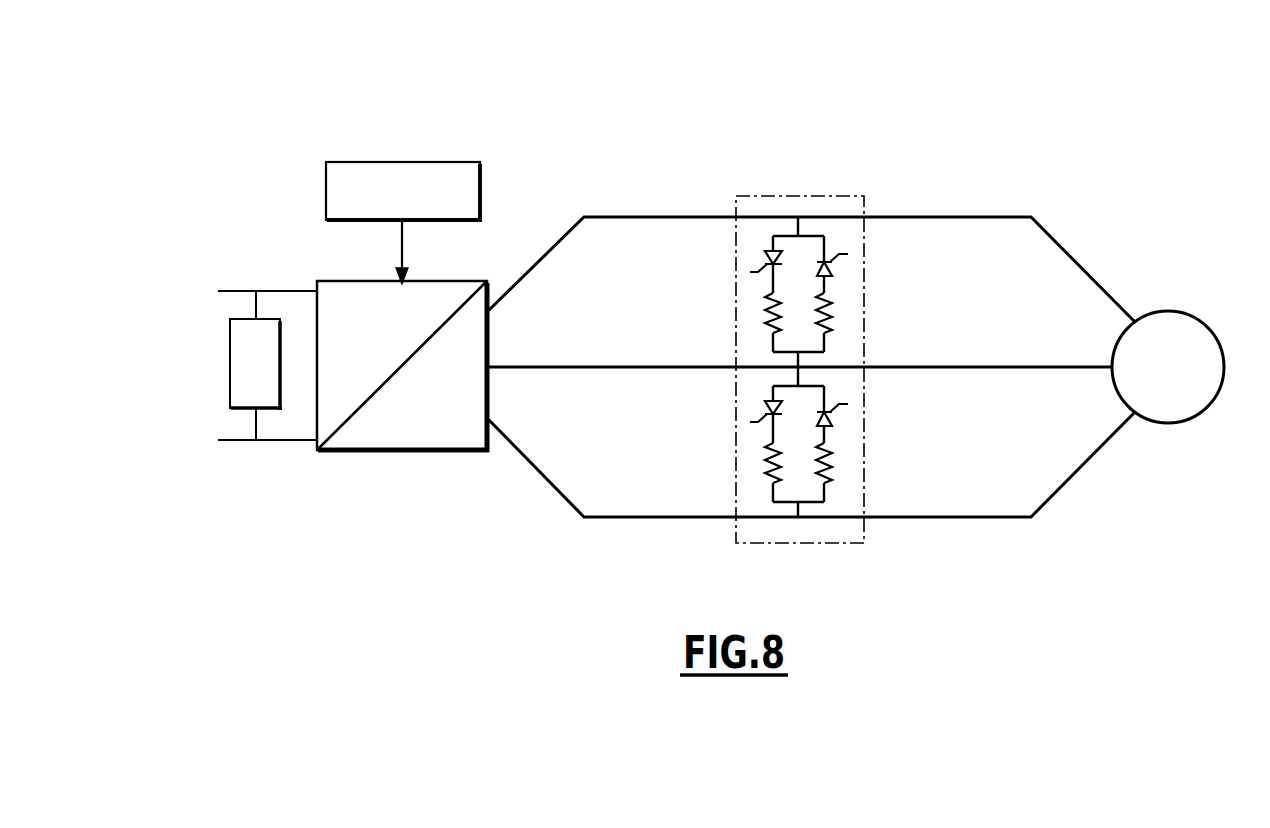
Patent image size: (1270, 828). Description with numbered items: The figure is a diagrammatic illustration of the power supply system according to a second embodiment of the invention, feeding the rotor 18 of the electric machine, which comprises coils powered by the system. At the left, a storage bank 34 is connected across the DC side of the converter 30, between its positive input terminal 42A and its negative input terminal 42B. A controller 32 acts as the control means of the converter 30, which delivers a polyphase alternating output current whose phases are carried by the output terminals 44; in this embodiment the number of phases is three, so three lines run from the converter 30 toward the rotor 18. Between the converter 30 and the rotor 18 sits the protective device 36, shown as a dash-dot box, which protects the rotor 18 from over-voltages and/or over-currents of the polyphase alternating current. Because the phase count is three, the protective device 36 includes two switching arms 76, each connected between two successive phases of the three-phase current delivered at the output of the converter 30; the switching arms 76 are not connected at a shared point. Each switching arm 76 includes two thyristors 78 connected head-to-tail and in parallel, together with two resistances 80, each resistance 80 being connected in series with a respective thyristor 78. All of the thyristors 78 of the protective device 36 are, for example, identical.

The rotor 18 is at (1189, 319).
The converter 30 is at (375, 453).
The controller 32 is at (433, 162).
The storage bank 34 is at (229, 366).
The protective device 36 is at (818, 196).
The positive input terminal 42A is at (317, 288).
The negative input terminal 42B is at (316, 443).
The output terminals 44 is at (488, 315).
The switching arm 76 is at (832, 294).
The thyristors 78 is at (755, 262).
The resistances 80 is at (762, 329).